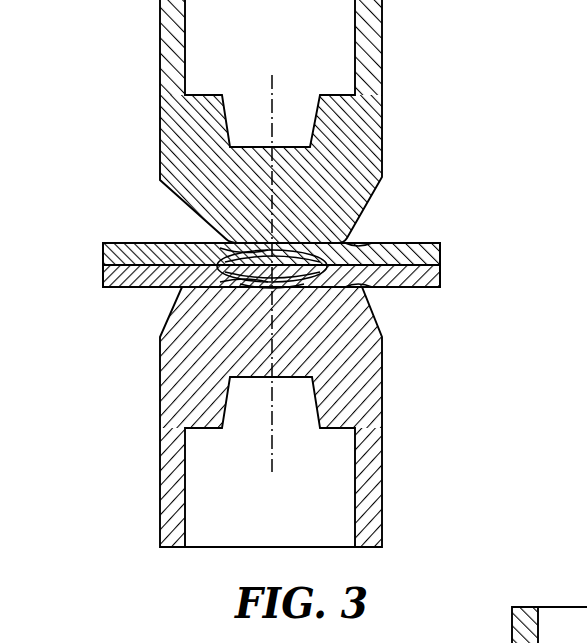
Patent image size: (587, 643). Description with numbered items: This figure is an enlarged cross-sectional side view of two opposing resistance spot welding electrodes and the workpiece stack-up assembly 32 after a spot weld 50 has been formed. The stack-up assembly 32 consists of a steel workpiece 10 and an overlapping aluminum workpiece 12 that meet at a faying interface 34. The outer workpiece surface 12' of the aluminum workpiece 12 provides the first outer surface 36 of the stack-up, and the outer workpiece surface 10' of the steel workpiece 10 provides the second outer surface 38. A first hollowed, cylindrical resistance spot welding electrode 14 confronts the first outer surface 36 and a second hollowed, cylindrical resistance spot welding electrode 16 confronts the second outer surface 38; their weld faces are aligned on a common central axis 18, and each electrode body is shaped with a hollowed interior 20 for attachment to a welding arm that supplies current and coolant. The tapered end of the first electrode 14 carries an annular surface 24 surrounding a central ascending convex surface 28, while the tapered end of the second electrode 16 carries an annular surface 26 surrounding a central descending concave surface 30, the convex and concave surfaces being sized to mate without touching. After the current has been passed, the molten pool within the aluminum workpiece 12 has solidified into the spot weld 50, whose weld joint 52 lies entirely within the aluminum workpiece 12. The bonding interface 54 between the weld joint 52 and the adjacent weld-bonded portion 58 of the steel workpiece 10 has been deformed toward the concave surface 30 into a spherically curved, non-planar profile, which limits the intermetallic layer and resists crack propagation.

The steel workpiece 10 is at (231, 294).
The outer workpiece surface of the steel workpiece 10' is at (253, 335).
The aluminum workpiece 12 is at (233, 230).
The outer workpiece surface of the aluminum workpiece 12' is at (248, 194).
The first resistance spot welding electrode 14 is at (398, 60).
The second resistance spot welding electrode 16 is at (402, 442).
The common central axis 18 is at (275, 103).
The hollowed interior 20 is at (287, 44).
The annular surface of the first welding electrode 24 is at (355, 240).
The annular surface of the second welding electrode 26 is at (370, 287).
The central ascending convex surface 28 is at (240, 243).
The central descending concave surface 30 is at (265, 288).
The workpiece stack-up assembly 32 is at (90, 265).
The faying interface 34 is at (415, 262).
The first outer surface 36 is at (412, 245).
The second outer surface 38 is at (418, 285).
The spot weld 50 is at (283, 241).
The weld joint 52 is at (320, 250).
The bonding interface 54 is at (300, 290).
The weld-bonded portion of the steel workpiece 58 is at (290, 292).